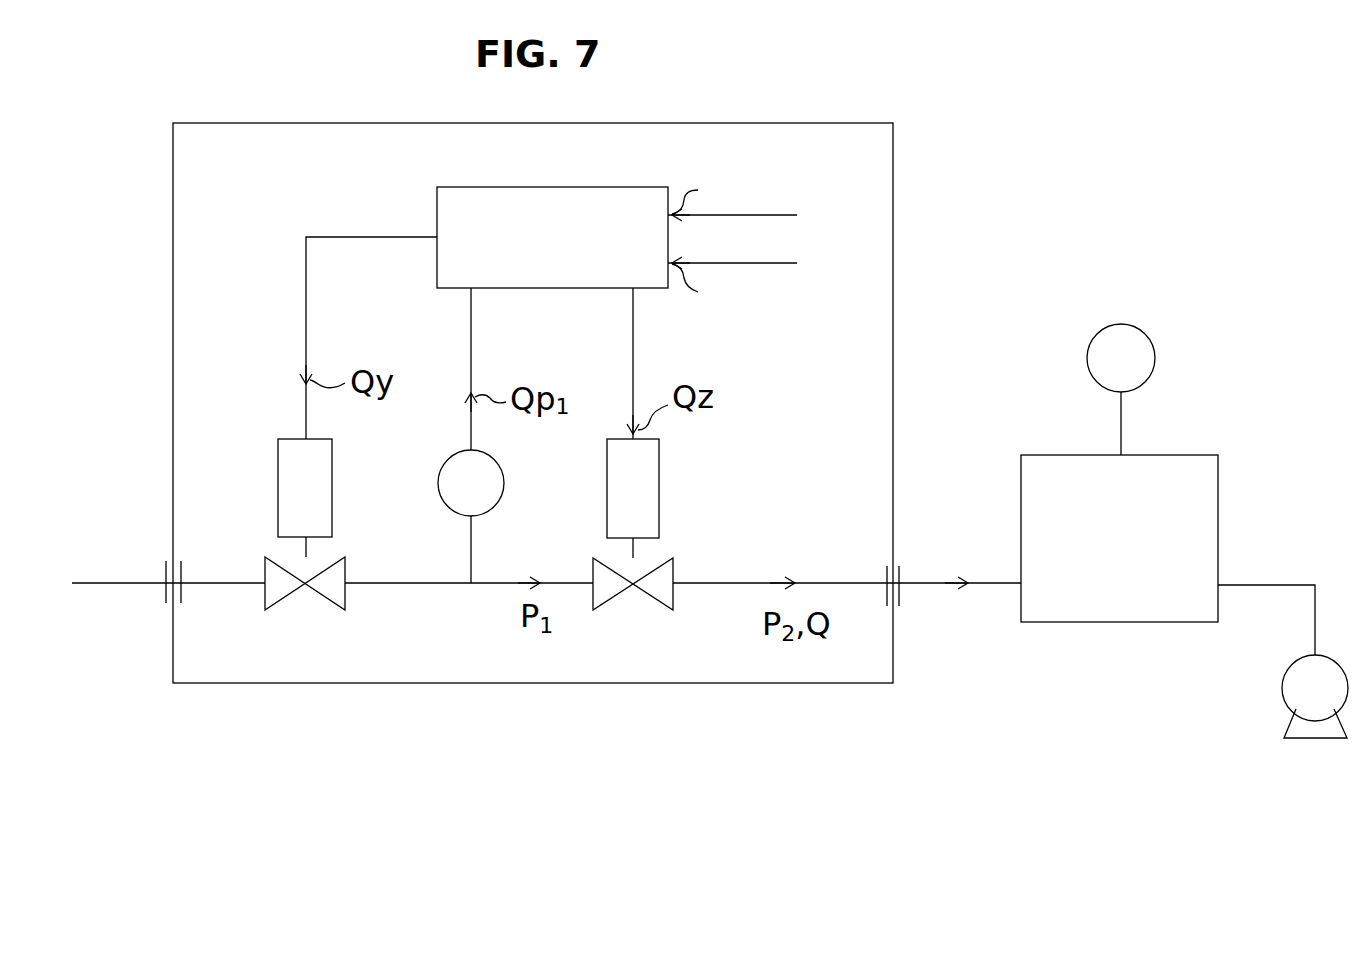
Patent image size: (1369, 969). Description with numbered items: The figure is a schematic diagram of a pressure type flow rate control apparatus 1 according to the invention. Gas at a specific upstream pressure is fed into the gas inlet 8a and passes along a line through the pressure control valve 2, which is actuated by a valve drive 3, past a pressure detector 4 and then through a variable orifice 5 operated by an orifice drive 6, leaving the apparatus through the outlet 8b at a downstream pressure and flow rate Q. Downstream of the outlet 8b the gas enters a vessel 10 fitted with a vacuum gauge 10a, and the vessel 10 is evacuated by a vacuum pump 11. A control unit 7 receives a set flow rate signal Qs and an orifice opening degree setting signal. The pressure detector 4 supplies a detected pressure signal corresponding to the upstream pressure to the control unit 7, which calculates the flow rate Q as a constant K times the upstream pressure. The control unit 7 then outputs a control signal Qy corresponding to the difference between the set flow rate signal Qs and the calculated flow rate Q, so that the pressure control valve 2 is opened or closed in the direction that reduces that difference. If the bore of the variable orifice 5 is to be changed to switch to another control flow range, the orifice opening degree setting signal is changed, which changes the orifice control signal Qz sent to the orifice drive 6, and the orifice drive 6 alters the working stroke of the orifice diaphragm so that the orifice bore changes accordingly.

The pressure type flow rate control apparatus 1 is at (899, 193).
The pressure control valve 2 is at (312, 594).
The valve drive 3 is at (325, 480).
The pressure detector 4 is at (503, 477).
The variable orifice 5 is at (660, 570).
The orifice drive 6 is at (652, 482).
The control unit 7 is at (578, 207).
The gas inlet 8a is at (166, 581).
The gas outlet 8b is at (900, 585).
The vessel 10 is at (1219, 503).
The vacuum gauge 10a is at (1155, 360).
The vacuum pump 11 is at (1283, 686).